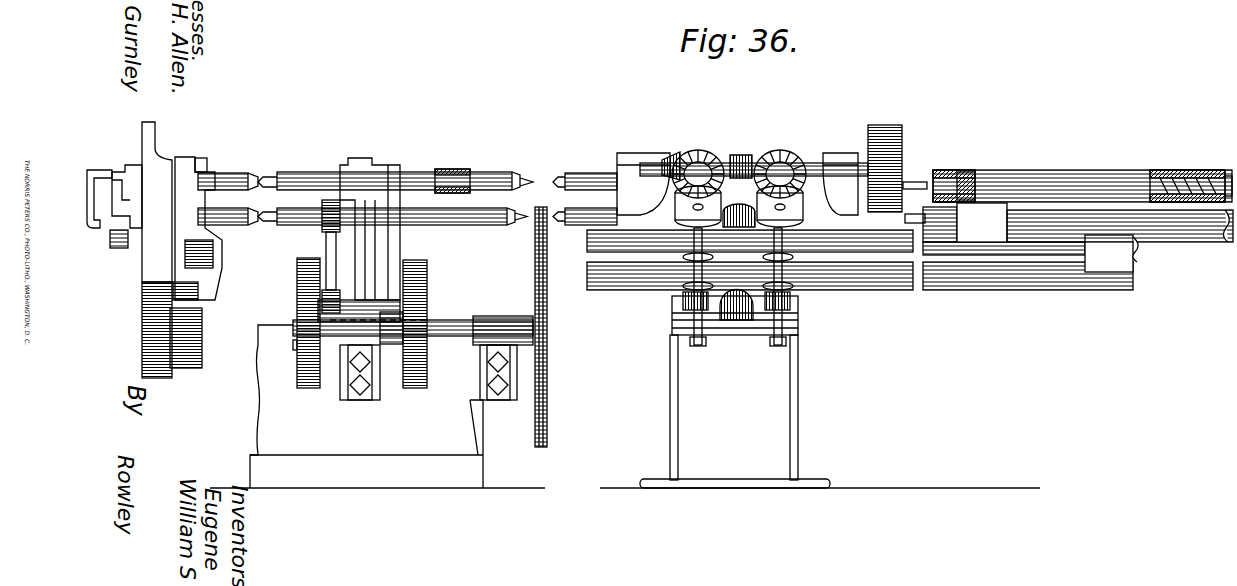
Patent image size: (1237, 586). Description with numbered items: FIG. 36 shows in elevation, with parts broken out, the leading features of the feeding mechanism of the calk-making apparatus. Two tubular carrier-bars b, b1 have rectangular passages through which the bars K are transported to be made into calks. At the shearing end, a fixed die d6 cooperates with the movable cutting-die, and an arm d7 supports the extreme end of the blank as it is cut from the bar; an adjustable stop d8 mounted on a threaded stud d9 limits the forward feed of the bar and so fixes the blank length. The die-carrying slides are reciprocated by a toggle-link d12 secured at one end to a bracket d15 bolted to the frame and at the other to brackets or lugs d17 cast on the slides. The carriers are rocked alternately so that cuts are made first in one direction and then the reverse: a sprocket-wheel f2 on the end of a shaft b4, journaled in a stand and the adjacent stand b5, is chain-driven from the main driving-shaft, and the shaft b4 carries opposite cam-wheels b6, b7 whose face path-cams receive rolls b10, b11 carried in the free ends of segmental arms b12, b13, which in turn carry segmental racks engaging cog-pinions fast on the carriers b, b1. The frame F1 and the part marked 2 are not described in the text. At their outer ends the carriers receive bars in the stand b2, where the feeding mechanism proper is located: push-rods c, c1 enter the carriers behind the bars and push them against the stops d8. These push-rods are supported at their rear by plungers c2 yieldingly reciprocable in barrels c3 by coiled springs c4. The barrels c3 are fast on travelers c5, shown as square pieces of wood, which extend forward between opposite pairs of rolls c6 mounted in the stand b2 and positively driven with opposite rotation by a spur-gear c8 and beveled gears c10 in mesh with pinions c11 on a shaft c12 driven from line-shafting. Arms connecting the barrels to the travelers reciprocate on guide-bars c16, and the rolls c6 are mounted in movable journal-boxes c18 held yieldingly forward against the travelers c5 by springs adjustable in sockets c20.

The frame F1 is at (258, 370).
The fixed die d6 is at (171, 160).
The arm d7 is at (112, 176).
The adjustable stop d8 is at (93, 168).
The threaded stud d9 is at (128, 242).
The toggle-link d12 is at (190, 212).
The bracket d15 is at (201, 171).
The brackets or lugs d17 is at (200, 303).
The bars K is at (258, 192).
The carrier-bar b is at (497, 227).
The carrier-bar b1 is at (482, 179).
The stand b2 is at (800, 377).
The shaft b4 is at (453, 328).
The stand b5 is at (498, 396).
The cam-wheel b6 is at (297, 270).
The cam-wheel b7 is at (424, 272).
The roll b10 is at (293, 346).
The roll b11 is at (402, 299).
The segmental arm b12 is at (323, 243).
The segmental arm b13 is at (398, 210).
The yoke block 2 is at (413, 266).
The sprocket-wheel f2 is at (536, 248).
The push-rod c is at (920, 215).
The push-rod c1 is at (906, 186).
The plunger c2 is at (940, 178).
The barrel c3 is at (1091, 177).
The coiled spring c4 is at (1167, 173).
The traveler c5 is at (590, 264).
The rolls c6 is at (683, 300).
The spur-gear c8 is at (763, 200).
The beveled gear c10 is at (697, 151).
The pinion c11 is at (668, 151).
The shaft c12 is at (808, 166).
The guide-bar c16 is at (962, 205).
The movable journal-box c18 is at (688, 318).
The socket c20 is at (690, 262).